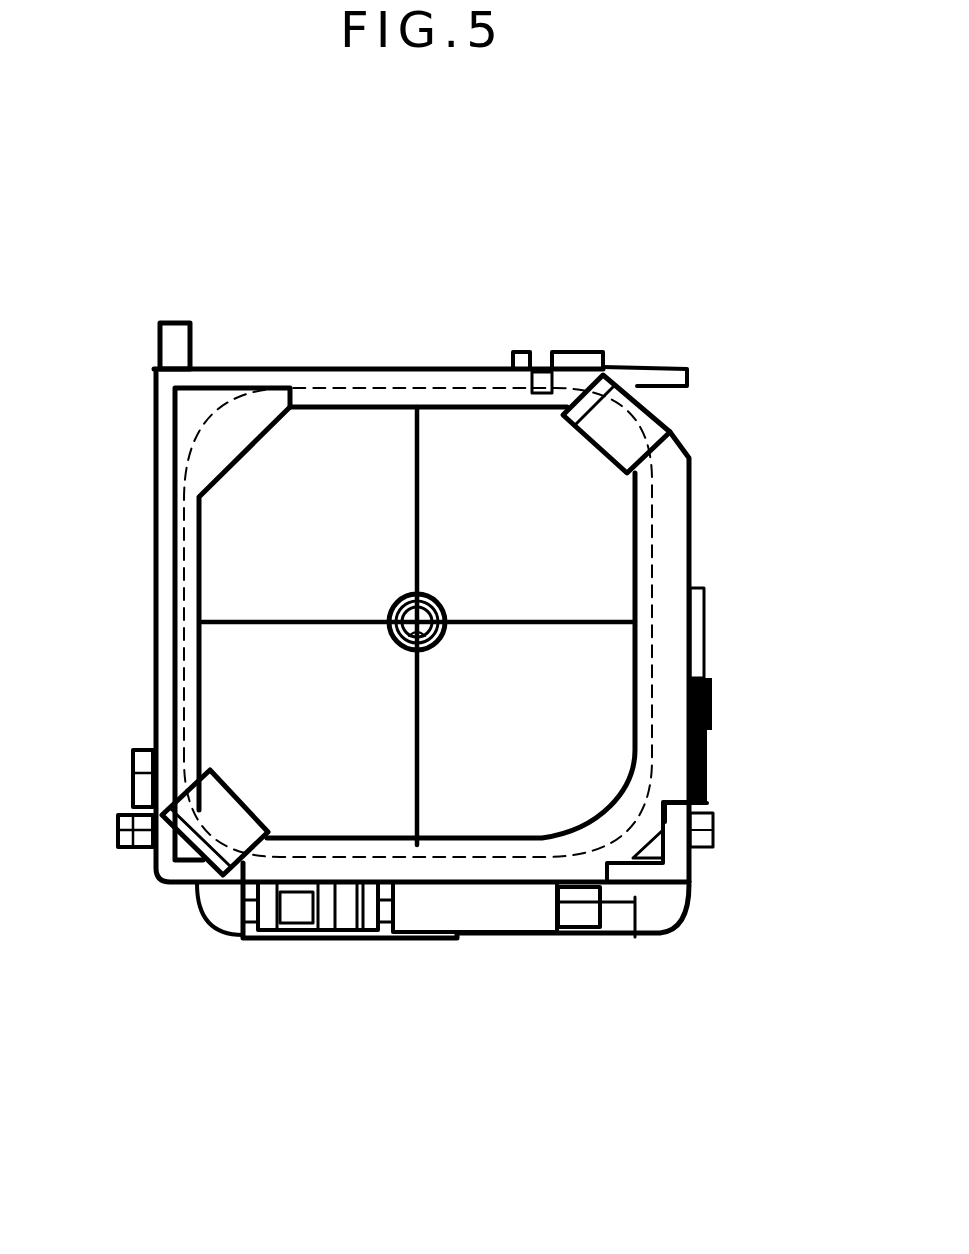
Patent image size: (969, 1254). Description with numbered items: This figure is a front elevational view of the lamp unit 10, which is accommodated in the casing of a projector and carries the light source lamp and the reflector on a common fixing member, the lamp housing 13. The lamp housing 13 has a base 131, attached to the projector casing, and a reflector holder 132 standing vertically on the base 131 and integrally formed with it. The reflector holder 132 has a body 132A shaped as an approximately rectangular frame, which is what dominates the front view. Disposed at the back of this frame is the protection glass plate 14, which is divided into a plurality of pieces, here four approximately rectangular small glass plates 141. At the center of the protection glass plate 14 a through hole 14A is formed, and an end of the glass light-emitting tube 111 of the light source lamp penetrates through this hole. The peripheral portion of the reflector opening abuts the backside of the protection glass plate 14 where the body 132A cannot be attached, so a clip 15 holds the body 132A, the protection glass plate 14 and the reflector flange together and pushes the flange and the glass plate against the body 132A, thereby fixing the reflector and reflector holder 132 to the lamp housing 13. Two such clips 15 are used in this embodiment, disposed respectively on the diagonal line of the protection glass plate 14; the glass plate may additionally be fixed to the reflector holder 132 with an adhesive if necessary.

The lamp unit 10 is at (142, 320).
The lamp housing 13 is at (468, 952).
The protection glass plate 14 is at (365, 440).
The through hole 14A is at (440, 645).
The clip 15 is at (640, 412).
The light-emitting tube 111 is at (437, 597).
The base 131 is at (185, 873).
The reflector holder 132 is at (668, 548).
The body 132A is at (668, 773).
The small glass plates 141 is at (225, 680).